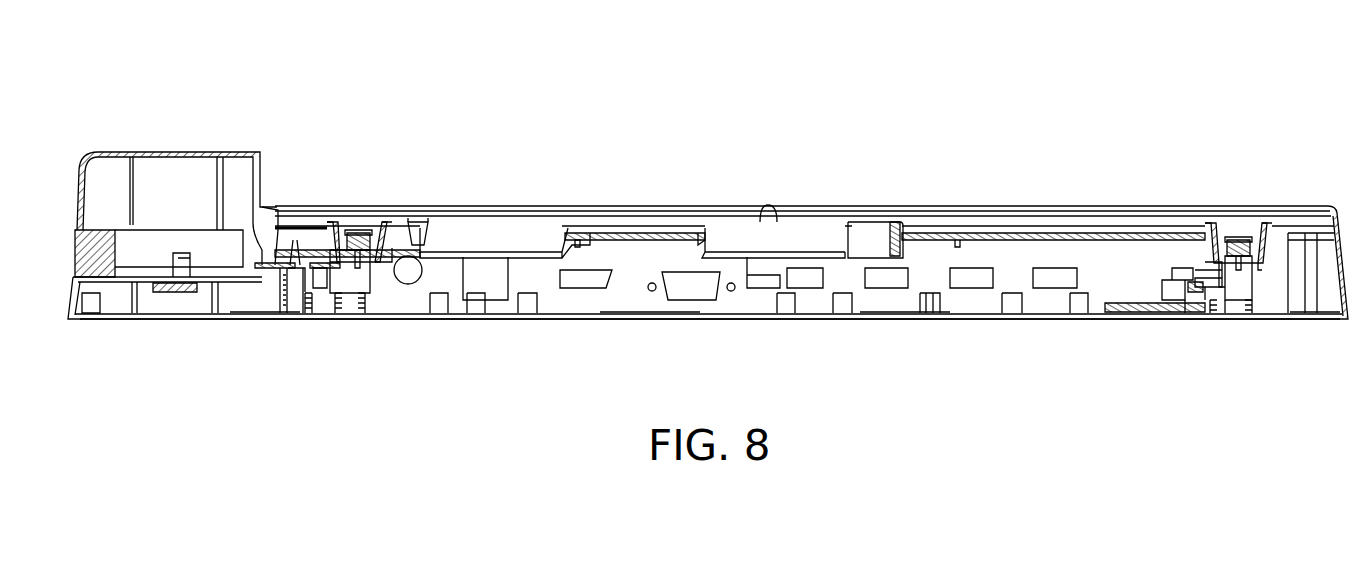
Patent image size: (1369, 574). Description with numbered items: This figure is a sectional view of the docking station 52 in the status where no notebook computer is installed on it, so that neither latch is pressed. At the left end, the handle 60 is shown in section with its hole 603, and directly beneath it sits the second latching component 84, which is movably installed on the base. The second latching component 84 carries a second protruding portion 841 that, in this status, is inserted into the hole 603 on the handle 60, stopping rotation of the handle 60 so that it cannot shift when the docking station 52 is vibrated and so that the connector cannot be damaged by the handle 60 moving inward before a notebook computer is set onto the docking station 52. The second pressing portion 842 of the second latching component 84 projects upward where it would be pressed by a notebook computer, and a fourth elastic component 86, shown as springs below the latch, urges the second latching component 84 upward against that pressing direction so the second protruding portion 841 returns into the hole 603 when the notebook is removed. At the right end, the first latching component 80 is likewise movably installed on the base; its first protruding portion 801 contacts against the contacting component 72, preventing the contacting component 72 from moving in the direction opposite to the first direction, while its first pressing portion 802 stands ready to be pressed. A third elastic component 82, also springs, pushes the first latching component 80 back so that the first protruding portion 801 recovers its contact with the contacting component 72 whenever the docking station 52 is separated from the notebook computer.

The docking station 52 is at (1052, 113).
The handle 60 is at (268, 262).
The hole 603 is at (300, 262).
The second latching component 84 is at (475, 148).
The second protruding portion 841 is at (330, 232).
The second pressing portion 842 is at (358, 232).
The fourth elastic component 86 is at (312, 315).
The first latching component 80 is at (1295, 142).
The first protruding portion 801 is at (1178, 270).
The first pressing portion 802 is at (1238, 242).
The third elastic component 82 is at (1188, 314).
The contacting component 72 is at (1205, 313).